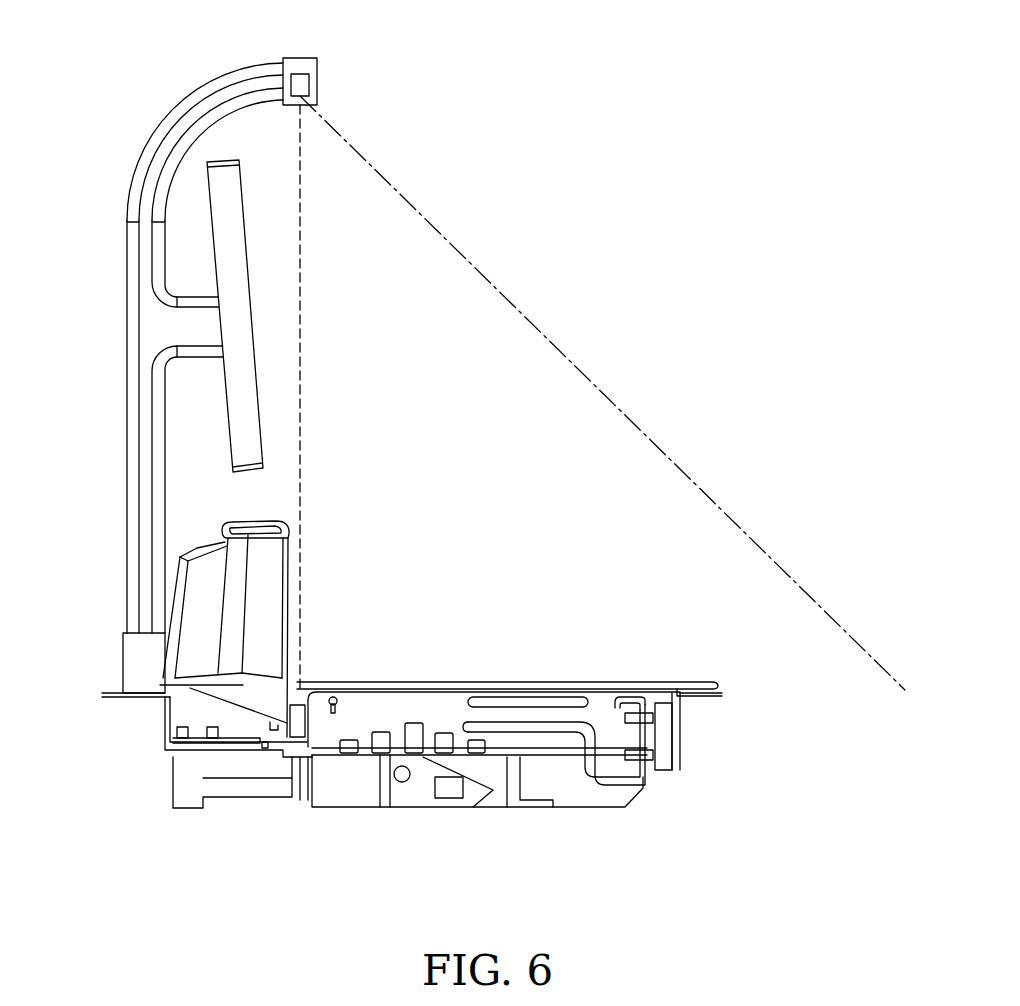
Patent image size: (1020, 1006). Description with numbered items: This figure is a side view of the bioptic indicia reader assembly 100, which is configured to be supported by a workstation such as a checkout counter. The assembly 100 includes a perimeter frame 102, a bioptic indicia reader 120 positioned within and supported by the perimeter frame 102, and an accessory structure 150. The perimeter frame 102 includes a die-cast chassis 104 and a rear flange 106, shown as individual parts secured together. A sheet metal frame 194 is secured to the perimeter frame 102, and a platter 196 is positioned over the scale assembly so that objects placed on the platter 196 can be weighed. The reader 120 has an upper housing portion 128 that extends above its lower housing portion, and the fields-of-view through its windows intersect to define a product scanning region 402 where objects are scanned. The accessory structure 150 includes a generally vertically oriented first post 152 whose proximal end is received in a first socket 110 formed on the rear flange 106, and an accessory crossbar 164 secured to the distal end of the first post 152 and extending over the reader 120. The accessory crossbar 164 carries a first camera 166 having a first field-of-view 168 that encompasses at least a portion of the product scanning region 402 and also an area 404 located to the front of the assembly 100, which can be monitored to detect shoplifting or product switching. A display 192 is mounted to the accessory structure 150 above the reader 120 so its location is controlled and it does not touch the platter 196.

The bioptic indicia reader assembly 100 is at (520, 83).
The perimeter frame 102 is at (158, 754).
The chassis 104 is at (242, 766).
The rear flange 106 is at (118, 700).
The first socket 110 is at (130, 651).
The bioptic indicia reader 120 is at (271, 602).
The upper housing portion 128 is at (265, 562).
The accessory structure 150 is at (168, 82).
The first post 152 is at (142, 497).
The accessory crossbar 164 is at (318, 82).
The first camera 166 is at (300, 74).
The first field-of-view 168 is at (568, 358).
The display 192 is at (245, 398).
The sheet metal frame 194 is at (578, 775).
The platter 196 is at (585, 682).
The product scanning region 402 is at (483, 626).
The area located to a front of the bioptic indicia reader assembly 404 is at (799, 766).